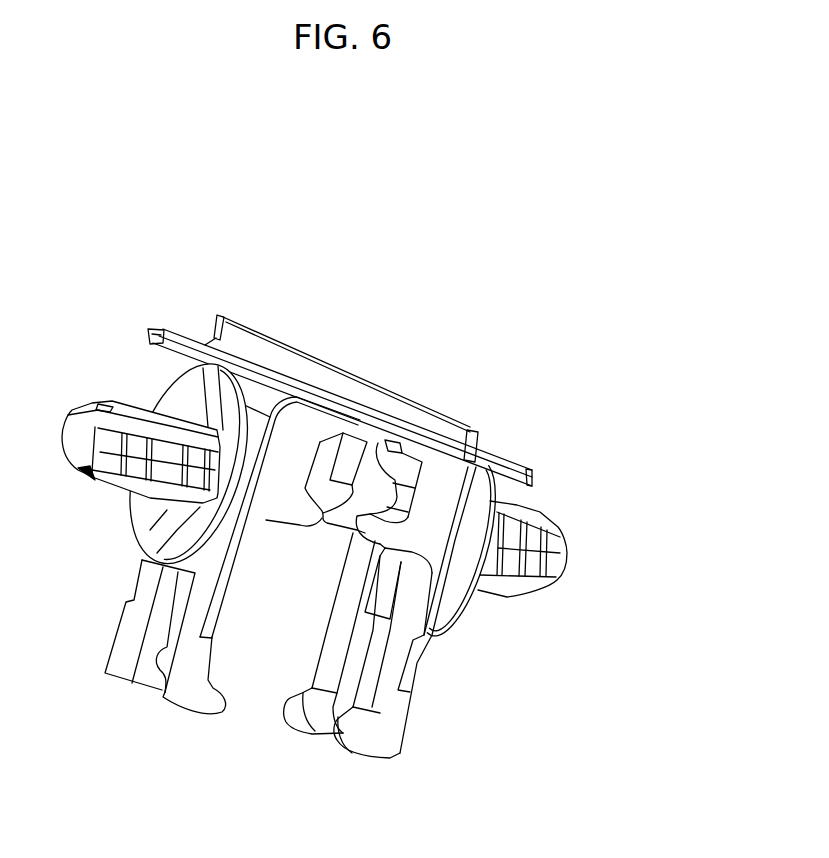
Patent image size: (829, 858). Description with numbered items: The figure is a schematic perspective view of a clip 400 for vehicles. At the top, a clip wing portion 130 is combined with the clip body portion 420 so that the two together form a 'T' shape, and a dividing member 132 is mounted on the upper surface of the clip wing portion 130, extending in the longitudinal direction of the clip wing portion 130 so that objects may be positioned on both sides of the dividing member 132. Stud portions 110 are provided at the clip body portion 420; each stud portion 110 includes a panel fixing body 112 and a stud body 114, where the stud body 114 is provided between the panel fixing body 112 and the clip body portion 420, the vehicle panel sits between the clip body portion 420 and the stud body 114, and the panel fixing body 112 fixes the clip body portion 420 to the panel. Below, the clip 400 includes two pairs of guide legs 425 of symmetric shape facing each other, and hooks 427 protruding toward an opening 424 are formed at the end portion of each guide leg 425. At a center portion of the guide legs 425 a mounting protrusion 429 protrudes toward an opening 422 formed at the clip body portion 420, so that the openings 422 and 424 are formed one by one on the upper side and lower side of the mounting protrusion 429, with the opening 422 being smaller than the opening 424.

The clip for vehicles 400 is at (287, 203).
The stud portions 110 is at (537, 598).
The panel fixing body 112 is at (556, 565).
The stud body 114 is at (453, 597).
The clip wing portion 130 is at (500, 462).
The dividing member 132 is at (315, 375).
The clip body portion 420 is at (453, 490).
The opening 422 is at (380, 450).
The opening 424 is at (388, 690).
The guide legs 425 is at (412, 658).
The hooks 427 is at (341, 744).
The mounting protrusion 429 is at (312, 523).